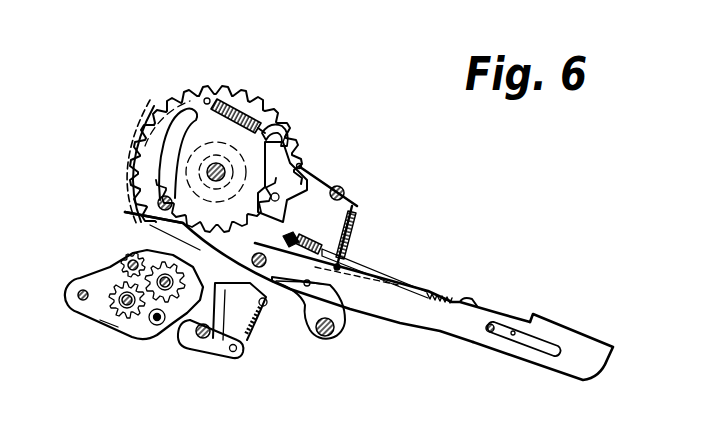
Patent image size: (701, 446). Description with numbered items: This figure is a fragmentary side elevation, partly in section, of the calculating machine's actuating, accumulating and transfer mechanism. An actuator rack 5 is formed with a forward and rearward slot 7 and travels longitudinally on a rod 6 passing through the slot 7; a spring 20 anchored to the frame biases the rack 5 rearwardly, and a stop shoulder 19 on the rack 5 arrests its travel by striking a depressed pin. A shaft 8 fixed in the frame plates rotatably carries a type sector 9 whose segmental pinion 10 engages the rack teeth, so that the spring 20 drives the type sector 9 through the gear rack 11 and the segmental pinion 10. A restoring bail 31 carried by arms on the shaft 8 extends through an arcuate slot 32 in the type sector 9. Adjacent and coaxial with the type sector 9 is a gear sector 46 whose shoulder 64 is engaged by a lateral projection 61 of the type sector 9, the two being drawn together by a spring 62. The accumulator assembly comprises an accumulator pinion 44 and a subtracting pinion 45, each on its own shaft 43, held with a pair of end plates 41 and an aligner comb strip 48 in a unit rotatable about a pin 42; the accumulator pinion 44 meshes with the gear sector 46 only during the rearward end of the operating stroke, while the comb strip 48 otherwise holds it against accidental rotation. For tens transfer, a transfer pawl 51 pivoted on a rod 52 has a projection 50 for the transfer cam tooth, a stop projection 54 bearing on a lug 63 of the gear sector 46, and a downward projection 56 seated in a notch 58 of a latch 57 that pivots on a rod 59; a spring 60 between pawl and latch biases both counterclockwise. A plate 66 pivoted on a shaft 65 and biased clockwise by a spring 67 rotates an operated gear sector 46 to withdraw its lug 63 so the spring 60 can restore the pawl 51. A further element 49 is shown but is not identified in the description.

The actuator rack 5 is at (455, 331).
The rod 6 is at (491, 323).
The slot 7 is at (514, 331).
The shaft 8 is at (222, 168).
The type sector 9 is at (185, 95).
The segmental pinion 10 is at (250, 193).
The gear rack 11 is at (342, 188).
The stop shoulder 19 is at (580, 337).
The spring 20 is at (445, 298).
The restoring bail 31 is at (143, 163).
The arcuate slot 32 is at (165, 130).
The end plate 41 is at (77, 292).
The pin 42 is at (110, 270).
The shaft 43 is at (124, 308).
The accumulator pinion 44 is at (153, 262).
The subtracting pinion 45 is at (110, 313).
The gear sector 46 is at (280, 227).
The aligner comb strip 48 is at (160, 322).
The gear 49 is at (148, 308).
The projection 50 is at (163, 248).
The transfer pawl 51 is at (256, 273).
The rod 52 is at (336, 332).
The stop projection 54 is at (150, 215).
The downward projection 56 is at (181, 328).
The latch 57 is at (192, 338).
The notch 58 is at (237, 338).
The rod 59 is at (204, 338).
The spring 60 is at (248, 342).
The lateral projection 61 is at (283, 130).
The spring 62 is at (220, 107).
The lug 63 is at (160, 200).
The shoulder 64 is at (278, 136).
The shaft 65 is at (345, 191).
The plate 66 is at (355, 208).
The spring 67 is at (348, 243).